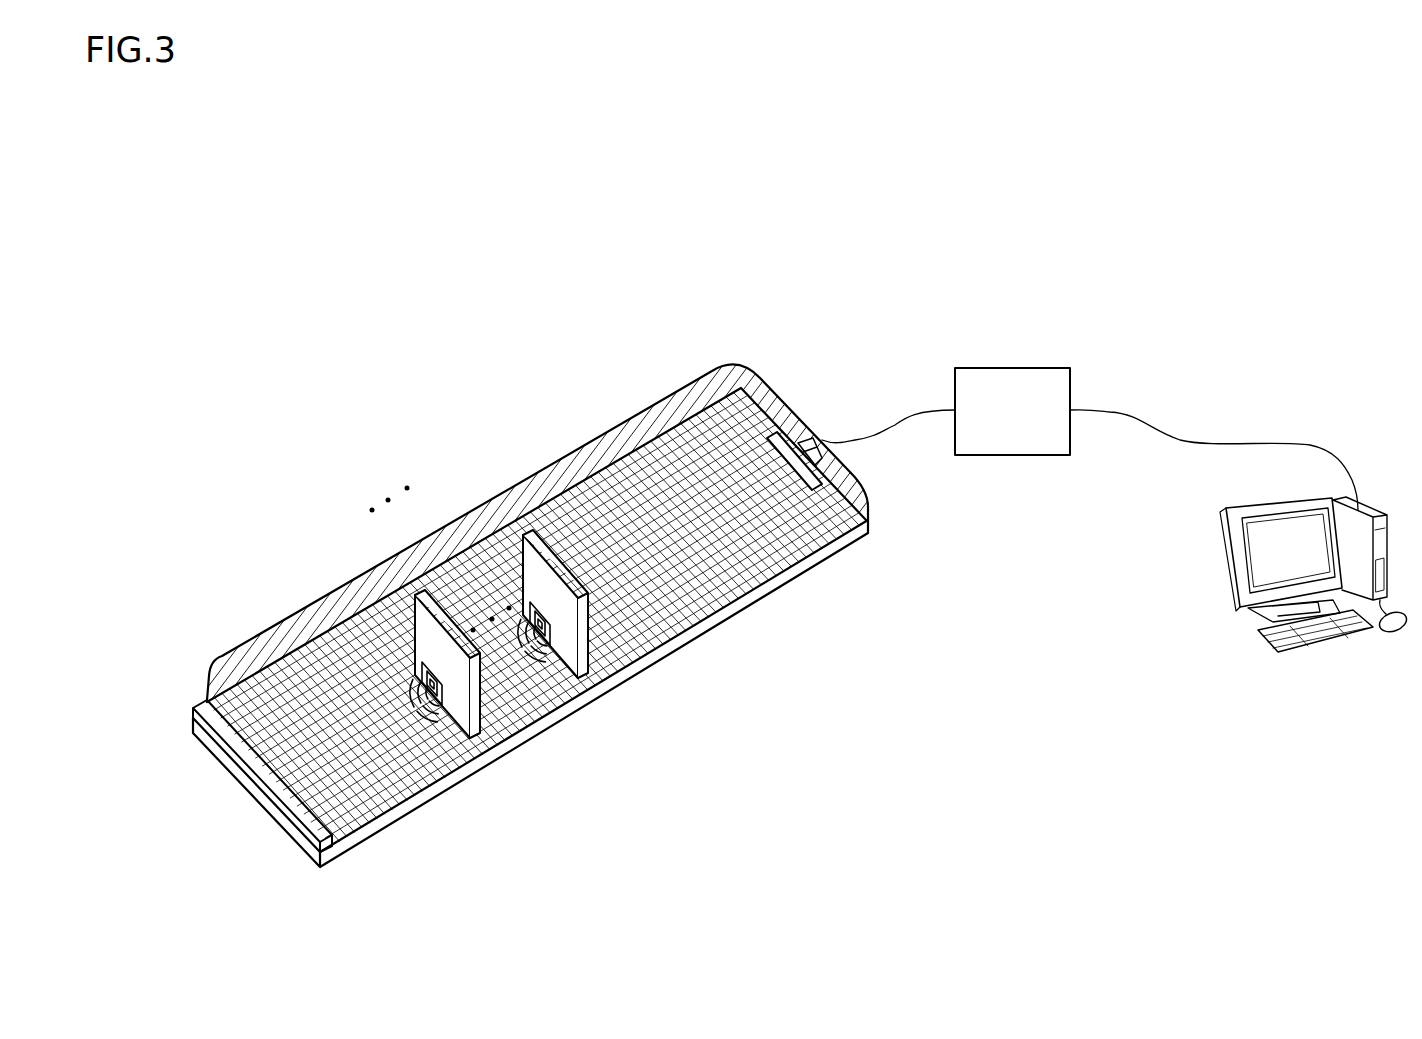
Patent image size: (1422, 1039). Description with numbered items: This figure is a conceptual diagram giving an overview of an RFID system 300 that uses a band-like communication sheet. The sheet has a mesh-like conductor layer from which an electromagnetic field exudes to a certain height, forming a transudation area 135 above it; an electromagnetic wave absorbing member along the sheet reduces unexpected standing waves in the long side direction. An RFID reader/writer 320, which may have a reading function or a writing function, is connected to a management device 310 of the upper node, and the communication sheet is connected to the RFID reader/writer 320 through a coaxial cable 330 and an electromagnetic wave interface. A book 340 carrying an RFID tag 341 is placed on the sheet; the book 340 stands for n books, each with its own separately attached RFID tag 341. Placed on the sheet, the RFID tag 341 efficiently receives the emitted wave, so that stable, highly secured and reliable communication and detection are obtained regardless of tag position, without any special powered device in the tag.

The RFID system 300 is at (915, 280).
The transudation area 135 is at (608, 447).
The management device 310 is at (1228, 557).
The RFID reader/writer 320 is at (1012, 455).
The coaxial cable 330 is at (888, 430).
The book 340 is at (441, 582).
The RFID tag 341 is at (574, 730).